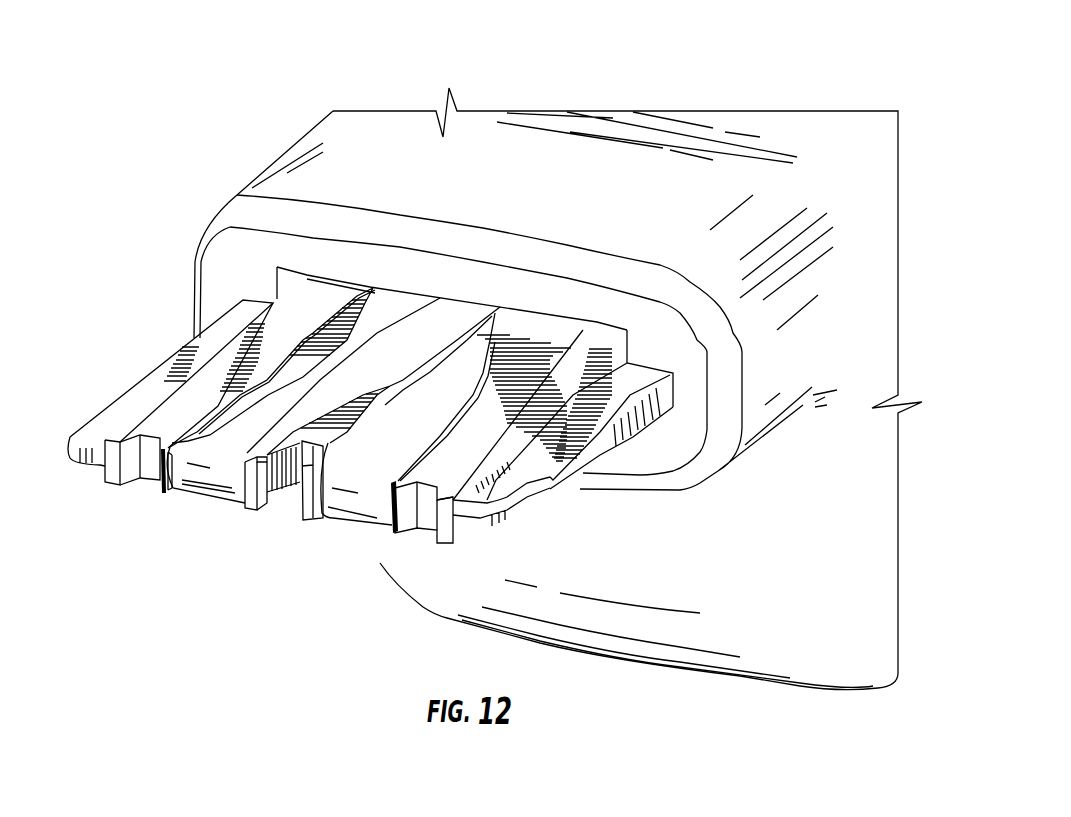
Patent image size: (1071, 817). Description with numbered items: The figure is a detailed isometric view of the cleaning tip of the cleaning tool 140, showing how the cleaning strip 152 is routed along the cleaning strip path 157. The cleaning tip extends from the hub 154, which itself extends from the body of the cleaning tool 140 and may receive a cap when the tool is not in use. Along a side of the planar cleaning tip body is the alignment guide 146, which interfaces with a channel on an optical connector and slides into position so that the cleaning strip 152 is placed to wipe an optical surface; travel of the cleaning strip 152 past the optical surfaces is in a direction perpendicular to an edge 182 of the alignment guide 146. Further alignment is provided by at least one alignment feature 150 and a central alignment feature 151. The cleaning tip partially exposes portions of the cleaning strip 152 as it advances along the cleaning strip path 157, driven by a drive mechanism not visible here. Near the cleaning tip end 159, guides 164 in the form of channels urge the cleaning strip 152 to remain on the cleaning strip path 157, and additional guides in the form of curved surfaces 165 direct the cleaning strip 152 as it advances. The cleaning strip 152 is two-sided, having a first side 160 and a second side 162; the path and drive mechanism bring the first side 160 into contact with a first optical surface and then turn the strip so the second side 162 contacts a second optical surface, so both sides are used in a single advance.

The cleaning tool 140 is at (258, 130).
The hub 154 is at (597, 180).
The cleaning strip 152 is at (302, 400).
The cleaning strip path 157 is at (195, 425).
The cleaning tip end 159 is at (87, 480).
The alignment feature 150 is at (103, 512).
The guides 164 is at (140, 523).
The curved surfaces 165 is at (177, 537).
The first side 160 is at (217, 478).
The central alignment feature 151 is at (295, 488).
The second side 162 is at (363, 500).
The edge 182 is at (548, 490).
The alignment guide 146 is at (497, 494).